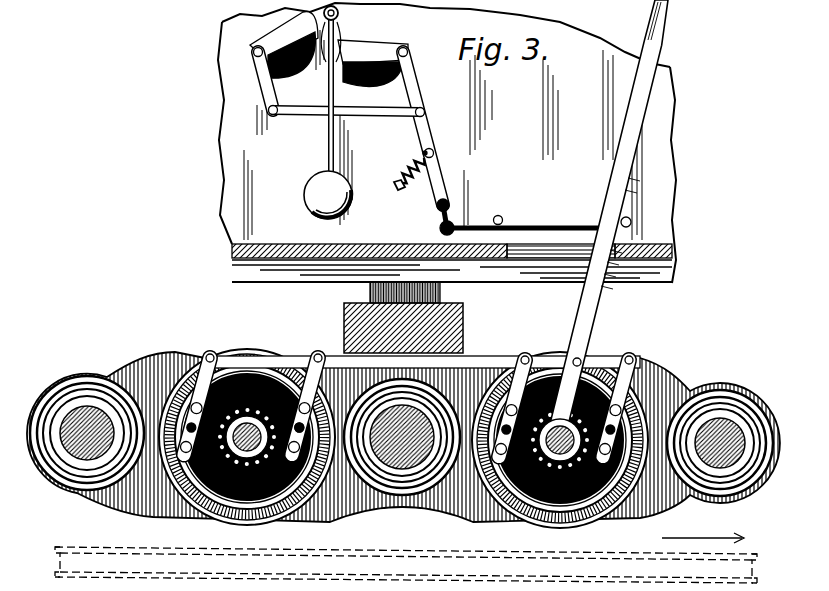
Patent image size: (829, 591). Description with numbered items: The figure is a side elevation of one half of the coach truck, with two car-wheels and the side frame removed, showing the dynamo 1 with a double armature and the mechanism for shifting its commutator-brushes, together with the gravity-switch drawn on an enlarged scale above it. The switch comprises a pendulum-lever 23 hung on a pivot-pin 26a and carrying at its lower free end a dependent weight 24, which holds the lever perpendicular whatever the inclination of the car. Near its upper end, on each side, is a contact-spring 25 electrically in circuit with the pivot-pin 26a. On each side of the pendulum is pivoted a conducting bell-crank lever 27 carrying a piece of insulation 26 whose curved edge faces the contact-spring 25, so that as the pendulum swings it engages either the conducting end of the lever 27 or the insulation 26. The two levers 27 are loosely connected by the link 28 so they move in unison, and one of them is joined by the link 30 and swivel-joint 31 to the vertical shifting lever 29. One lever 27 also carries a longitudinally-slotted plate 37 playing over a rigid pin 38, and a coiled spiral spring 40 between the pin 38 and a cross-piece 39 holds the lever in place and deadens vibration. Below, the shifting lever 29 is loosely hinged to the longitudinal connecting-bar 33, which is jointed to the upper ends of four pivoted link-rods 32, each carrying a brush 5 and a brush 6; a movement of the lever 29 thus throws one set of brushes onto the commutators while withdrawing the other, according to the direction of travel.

The dynamo-electric generator 1 is at (147, 346).
The commutator-brush 5 is at (188, 434).
The commutator-brush 6 is at (297, 434).
The pendulum-lever 23 is at (329, 152).
The dependent weight 24 is at (305, 207).
The contact-spring 25 is at (329, 55).
The piece of insulation 26 is at (339, 82).
The pivot-pin 26a is at (346, 13).
The bell-crank lever 27 is at (253, 64).
The link 28 is at (376, 115).
The shifting lever 29 is at (612, 172).
The link 30 is at (530, 218).
The swivel-joint 31 is at (459, 206).
The link-rod 32 is at (407, 405).
The connecting-bar 33 is at (414, 328).
The longitudinally-slotted plate 37 is at (398, 191).
The rigid pin 38 is at (395, 171).
The cross-piece 39 is at (411, 141).
The coiled spiral spring 40 is at (424, 152).